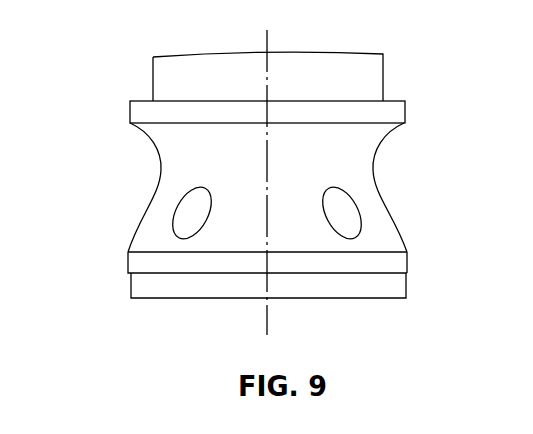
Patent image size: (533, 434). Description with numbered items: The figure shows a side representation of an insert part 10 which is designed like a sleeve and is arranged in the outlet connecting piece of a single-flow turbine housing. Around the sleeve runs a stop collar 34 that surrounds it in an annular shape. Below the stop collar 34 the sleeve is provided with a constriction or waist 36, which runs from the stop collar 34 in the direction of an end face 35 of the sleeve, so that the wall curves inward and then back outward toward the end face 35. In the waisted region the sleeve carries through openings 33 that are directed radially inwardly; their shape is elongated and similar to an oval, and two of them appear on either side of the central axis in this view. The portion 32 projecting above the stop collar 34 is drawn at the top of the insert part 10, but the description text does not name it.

The insert part 10 is at (390, 188).
The upper cylindrical portion 32 is at (370, 73).
The through openings 33 is at (345, 215).
The stop collar 34 is at (403, 109).
The end face 35 is at (148, 300).
The constriction or waist 36 is at (148, 177).